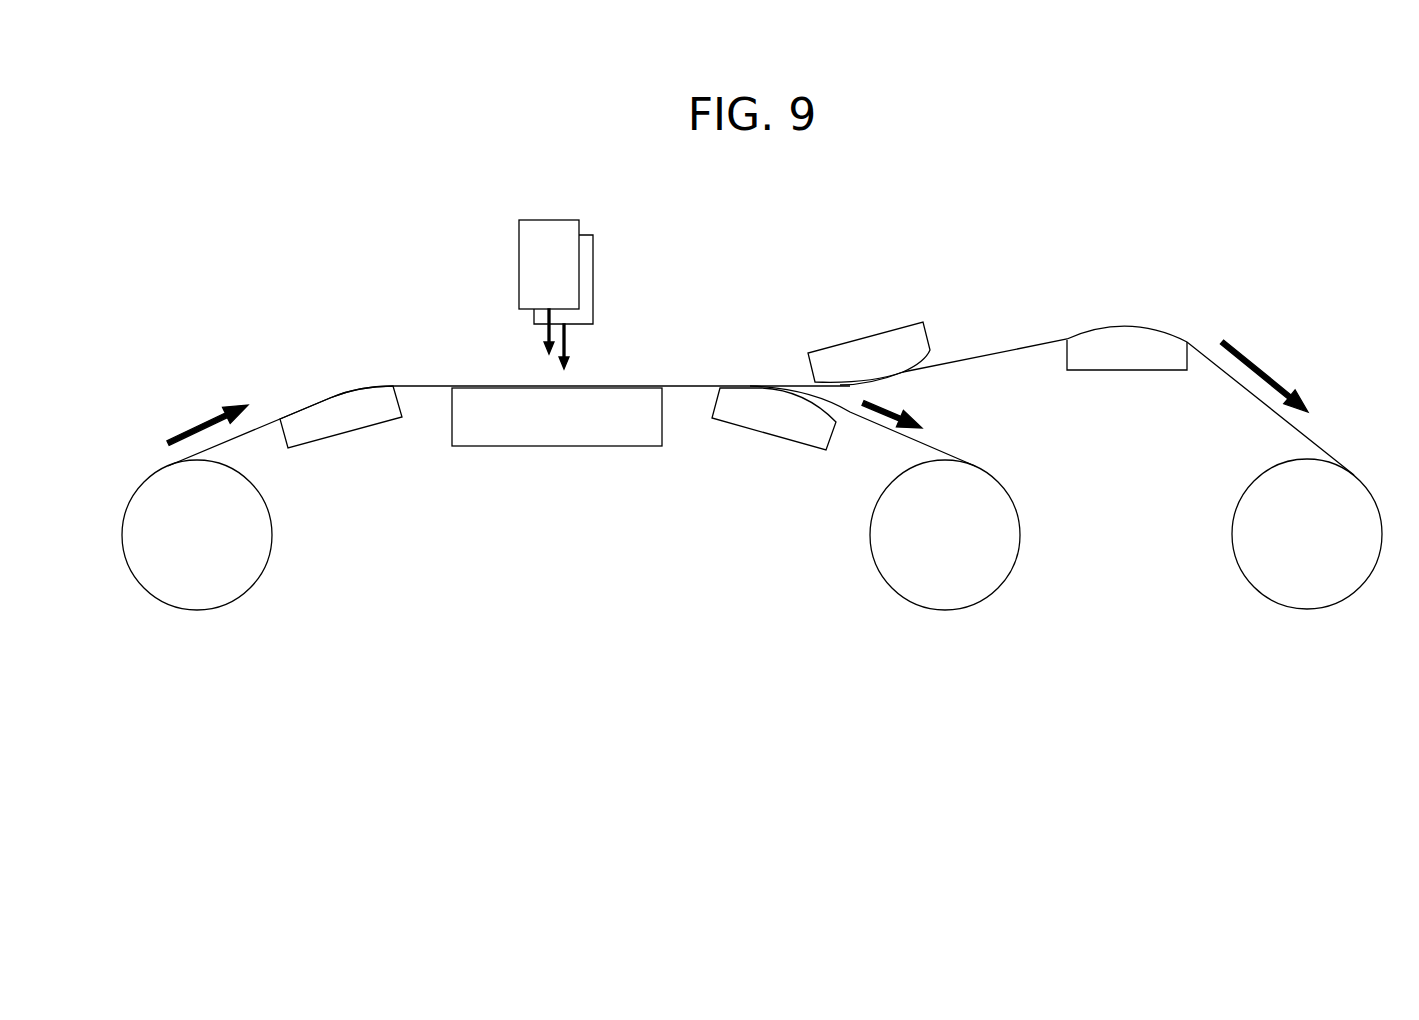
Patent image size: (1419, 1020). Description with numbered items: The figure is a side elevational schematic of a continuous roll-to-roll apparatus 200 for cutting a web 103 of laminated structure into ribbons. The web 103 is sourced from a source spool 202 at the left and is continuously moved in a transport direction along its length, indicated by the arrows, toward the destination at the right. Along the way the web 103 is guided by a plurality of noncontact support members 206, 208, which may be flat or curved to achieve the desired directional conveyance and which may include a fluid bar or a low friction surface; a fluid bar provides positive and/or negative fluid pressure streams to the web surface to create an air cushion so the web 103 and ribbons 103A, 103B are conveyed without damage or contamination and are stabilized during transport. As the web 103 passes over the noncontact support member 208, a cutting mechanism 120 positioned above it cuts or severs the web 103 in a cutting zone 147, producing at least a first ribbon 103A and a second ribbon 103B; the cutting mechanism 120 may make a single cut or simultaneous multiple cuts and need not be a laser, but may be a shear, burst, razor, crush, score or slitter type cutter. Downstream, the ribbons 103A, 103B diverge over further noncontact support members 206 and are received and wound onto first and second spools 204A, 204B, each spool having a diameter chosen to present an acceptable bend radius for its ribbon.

The continuous roll-to-roll apparatus 200 is at (728, 204).
The source spool 202 is at (248, 590).
The first spool 204A is at (960, 598).
The second spool 204B is at (1352, 597).
The web 103 is at (420, 383).
The first ribbon 103A is at (927, 445).
The second ribbon 103B is at (1012, 345).
The noncontact support member 206 is at (347, 415).
The noncontact support member 208 is at (592, 447).
The cutting mechanism 120 is at (542, 235).
The cutting zone 147 is at (497, 357).